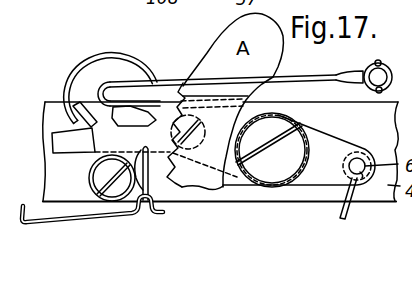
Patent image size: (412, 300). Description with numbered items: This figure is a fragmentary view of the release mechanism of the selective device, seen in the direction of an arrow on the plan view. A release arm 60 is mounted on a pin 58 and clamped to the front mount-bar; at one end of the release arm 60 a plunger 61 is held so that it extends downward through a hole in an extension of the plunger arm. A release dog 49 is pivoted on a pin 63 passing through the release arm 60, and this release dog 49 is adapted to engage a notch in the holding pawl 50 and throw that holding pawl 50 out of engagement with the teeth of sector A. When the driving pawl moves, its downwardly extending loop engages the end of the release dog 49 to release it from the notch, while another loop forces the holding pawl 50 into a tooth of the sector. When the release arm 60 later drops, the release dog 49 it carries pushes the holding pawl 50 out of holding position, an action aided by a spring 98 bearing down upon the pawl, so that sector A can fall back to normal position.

The release dog 49 is at (136, 106).
The holding pawl 50 is at (88, 163).
The pin 58 is at (272, 150).
The release arm 60 is at (335, 140).
The plunger 61 is at (343, 210).
The pin 63 is at (97, 178).
The spring 98 is at (81, 209).